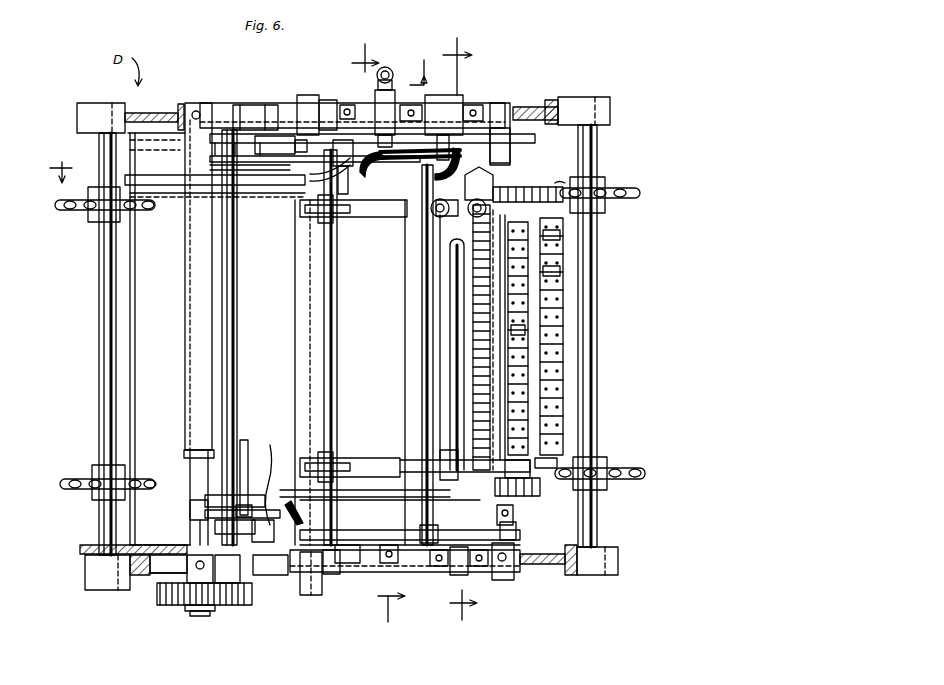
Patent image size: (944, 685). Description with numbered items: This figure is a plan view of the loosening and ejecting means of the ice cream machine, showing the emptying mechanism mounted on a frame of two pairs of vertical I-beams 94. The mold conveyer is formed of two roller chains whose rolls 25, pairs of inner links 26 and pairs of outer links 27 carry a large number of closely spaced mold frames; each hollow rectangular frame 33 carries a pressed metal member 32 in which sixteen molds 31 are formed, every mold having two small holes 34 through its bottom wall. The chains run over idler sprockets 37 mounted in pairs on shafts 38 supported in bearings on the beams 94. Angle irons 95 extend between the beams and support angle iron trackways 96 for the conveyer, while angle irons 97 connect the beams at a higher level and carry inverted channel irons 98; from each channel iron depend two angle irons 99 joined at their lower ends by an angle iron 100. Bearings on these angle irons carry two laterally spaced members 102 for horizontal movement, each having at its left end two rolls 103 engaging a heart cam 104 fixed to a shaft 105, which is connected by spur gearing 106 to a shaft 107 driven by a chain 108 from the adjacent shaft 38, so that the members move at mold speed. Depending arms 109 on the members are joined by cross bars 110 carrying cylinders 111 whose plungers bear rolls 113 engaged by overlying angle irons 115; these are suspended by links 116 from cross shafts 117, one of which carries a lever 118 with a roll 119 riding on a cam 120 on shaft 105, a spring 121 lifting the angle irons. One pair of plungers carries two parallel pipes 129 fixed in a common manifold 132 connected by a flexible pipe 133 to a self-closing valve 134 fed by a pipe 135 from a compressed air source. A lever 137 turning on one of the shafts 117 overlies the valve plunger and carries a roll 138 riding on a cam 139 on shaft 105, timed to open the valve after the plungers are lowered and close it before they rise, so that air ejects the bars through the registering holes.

The rolls of the chains 25 is at (560, 182).
The pairs of inner links 26 is at (532, 495).
The pairs of outer links 27 is at (550, 484).
The molds 31 is at (560, 306).
The pressed metal member 32 is at (563, 240).
The hollow rectangular frame 33 is at (563, 270).
The small holes 34 is at (531, 330).
The idler sprockets 37 is at (56, 206).
The shafts 38 is at (104, 365).
The vertical I-beams 94 is at (159, 113).
The angle irons 95 is at (126, 154).
The angle iron trackways 96 is at (150, 210).
The angle irons 97 is at (187, 320).
The inverted channel irons 98 is at (264, 103).
The angle irons 99 is at (373, 94).
The angle iron 100 is at (311, 596).
The laterally-spaced members 102 is at (308, 100).
The rolls 103 is at (198, 520).
The heart cam 104 is at (242, 103).
The shaft 105 is at (236, 358).
The spur gearing 106 is at (218, 605).
The shaft 107 is at (193, 612).
The chain 108 is at (168, 561).
The depending arms 109 is at (472, 100).
The cross bar 110 is at (502, 129).
The cylinders 111 is at (440, 214).
The rolls 113 is at (442, 245).
The angle irons 115 is at (405, 216).
The links 116 is at (378, 217).
The cross shafts 117 is at (332, 353).
The lever 118 is at (271, 493).
The roll 119 is at (190, 506).
The cam 120 is at (246, 456).
The spring 121 is at (288, 580).
The transversely disposed pipes 129 is at (490, 293).
The common manifold 132 is at (487, 177).
The flexible pipe 133 is at (410, 164).
The valve 134 is at (336, 167).
The pipe 135 is at (387, 69).
The lever 137 is at (285, 170).
The roll 138 is at (208, 176).
The cam 139 is at (249, 188).